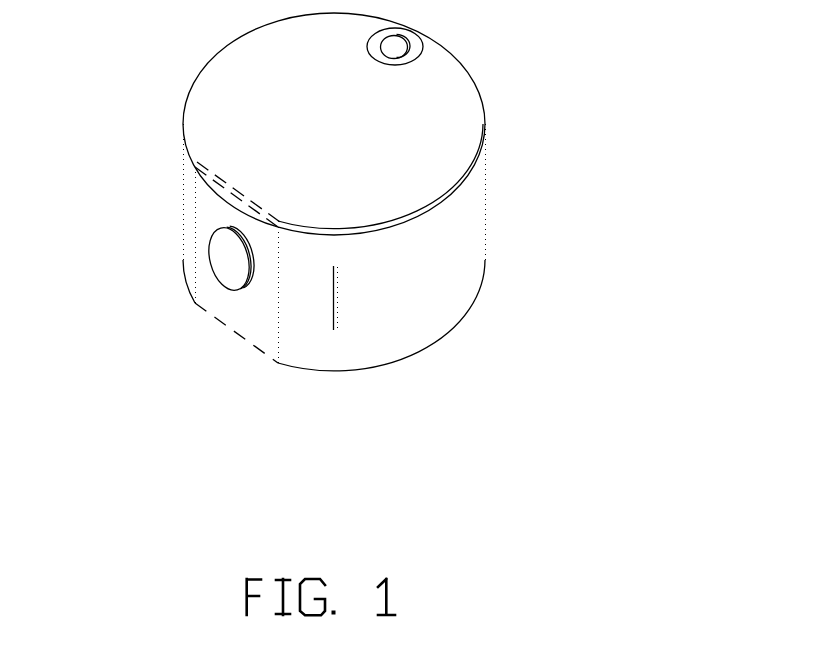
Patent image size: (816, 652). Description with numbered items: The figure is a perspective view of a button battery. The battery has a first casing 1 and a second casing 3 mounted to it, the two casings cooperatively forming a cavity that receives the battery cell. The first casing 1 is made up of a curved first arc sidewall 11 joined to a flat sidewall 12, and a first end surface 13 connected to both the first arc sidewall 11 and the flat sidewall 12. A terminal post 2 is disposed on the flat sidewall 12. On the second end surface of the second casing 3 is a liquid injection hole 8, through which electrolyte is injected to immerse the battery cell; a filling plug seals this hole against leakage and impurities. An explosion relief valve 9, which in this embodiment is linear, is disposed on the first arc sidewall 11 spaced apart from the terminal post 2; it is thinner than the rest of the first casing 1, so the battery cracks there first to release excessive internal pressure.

The first casing 1 is at (190, 224).
The terminal post 2 is at (225, 266).
The second casing 3 is at (297, 124).
The liquid injection hole 8 is at (397, 52).
The explosion relief valve 9 is at (333, 326).
The first arc sidewall 11 is at (418, 303).
The flat sidewall 12 is at (240, 320).
The first end surface 13 is at (405, 363).